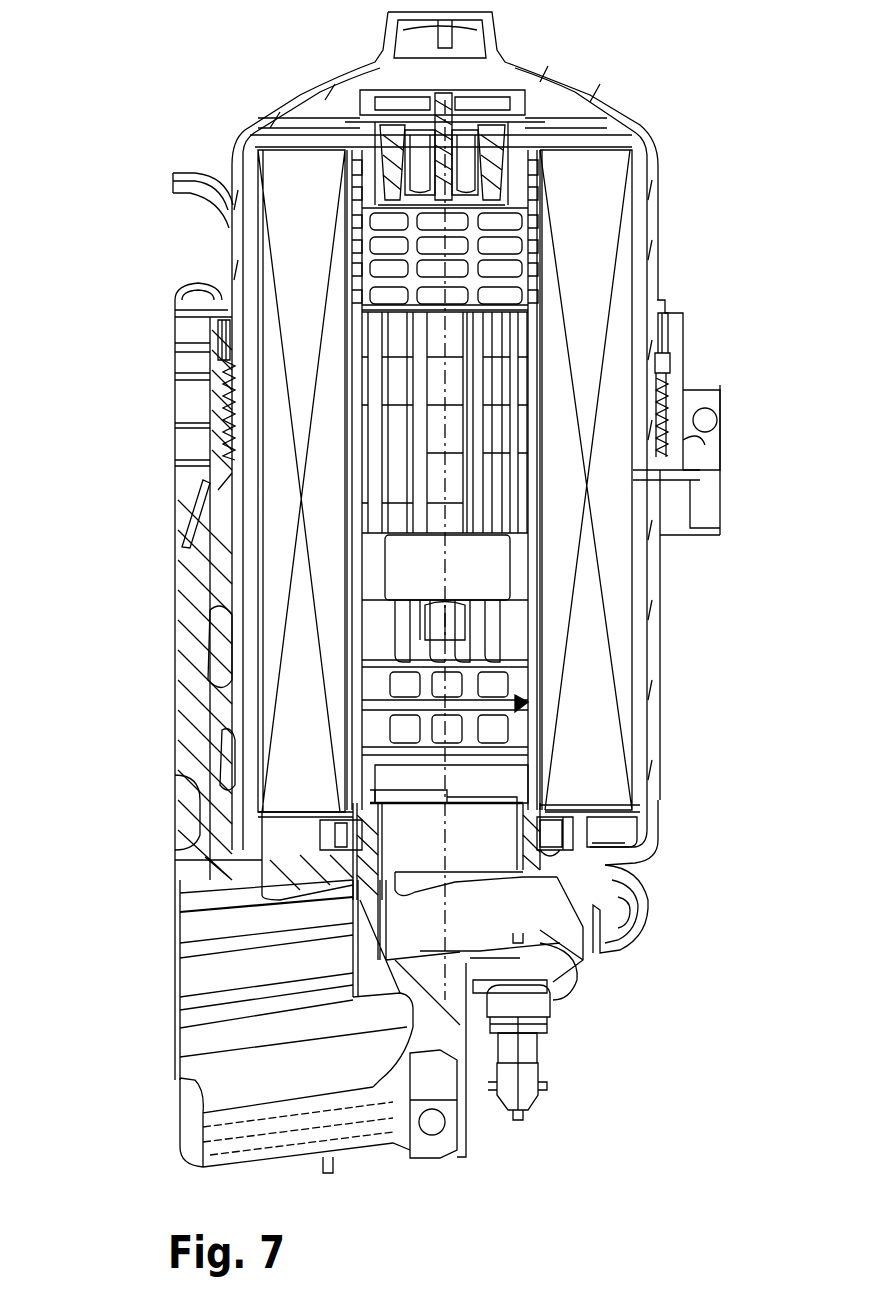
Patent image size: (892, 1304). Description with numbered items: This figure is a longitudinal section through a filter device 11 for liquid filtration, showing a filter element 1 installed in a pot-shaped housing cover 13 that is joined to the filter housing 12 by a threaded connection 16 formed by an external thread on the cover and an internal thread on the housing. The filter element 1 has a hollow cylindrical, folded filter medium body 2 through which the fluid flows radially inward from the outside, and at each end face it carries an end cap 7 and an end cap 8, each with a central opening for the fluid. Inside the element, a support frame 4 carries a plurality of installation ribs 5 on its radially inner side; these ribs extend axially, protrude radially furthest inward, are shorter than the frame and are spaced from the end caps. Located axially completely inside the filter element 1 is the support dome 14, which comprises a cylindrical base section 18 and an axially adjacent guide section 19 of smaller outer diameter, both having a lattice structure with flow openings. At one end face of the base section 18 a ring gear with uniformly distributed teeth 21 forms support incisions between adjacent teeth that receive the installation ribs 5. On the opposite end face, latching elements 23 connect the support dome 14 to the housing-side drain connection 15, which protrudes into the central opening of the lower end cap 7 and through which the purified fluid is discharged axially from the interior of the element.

The filter element 1 is at (640, 226).
The filter medium body 2 is at (598, 272).
The support frame 4 is at (385, 247).
The installation ribs 5 is at (512, 485).
The end cap 7 is at (283, 817).
The end cap 8 is at (600, 142).
The filter device 11 is at (213, 62).
The filter housing 12 is at (660, 624).
The housing cover 13 is at (605, 92).
The support dome 14 is at (528, 705).
The drain connection 15 is at (523, 850).
The threaded connection 16 is at (668, 392).
The base section 18 is at (477, 765).
The guide section 19 is at (483, 551).
The teeth 21 is at (450, 636).
The latching elements 23 is at (423, 796).